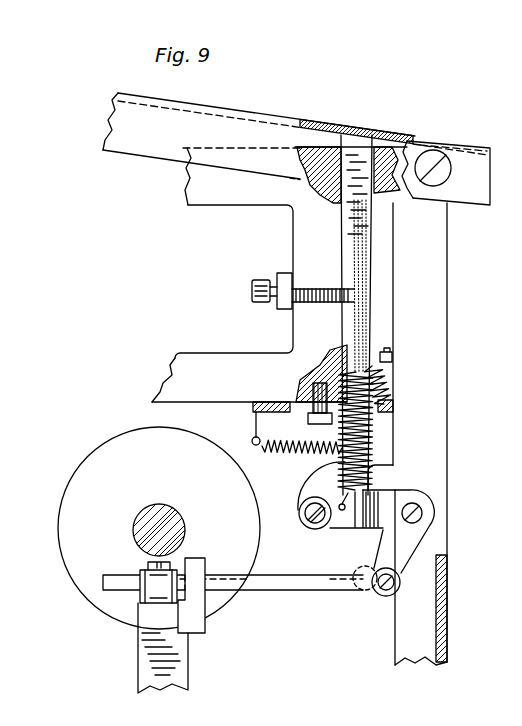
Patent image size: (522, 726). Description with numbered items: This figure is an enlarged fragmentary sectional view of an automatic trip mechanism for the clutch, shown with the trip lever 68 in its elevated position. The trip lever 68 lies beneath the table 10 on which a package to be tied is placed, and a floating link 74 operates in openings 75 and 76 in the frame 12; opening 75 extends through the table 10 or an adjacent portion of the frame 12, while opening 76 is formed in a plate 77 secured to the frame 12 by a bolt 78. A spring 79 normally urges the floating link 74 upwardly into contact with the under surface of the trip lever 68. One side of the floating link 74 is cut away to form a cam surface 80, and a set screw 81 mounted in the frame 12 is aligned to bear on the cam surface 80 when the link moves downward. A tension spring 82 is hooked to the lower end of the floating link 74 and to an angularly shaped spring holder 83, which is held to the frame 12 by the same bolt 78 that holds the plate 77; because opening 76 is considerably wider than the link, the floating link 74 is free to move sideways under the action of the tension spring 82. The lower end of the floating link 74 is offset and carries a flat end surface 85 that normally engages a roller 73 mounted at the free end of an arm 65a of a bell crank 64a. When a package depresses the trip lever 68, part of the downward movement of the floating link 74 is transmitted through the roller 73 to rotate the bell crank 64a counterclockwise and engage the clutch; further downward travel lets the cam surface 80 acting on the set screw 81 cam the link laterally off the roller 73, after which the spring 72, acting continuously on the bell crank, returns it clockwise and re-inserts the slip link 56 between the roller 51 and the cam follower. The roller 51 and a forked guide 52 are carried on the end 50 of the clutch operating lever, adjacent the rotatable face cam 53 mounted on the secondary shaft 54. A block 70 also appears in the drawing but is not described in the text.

The table 10 is at (208, 148).
The trip lever 68 is at (229, 109).
The opening 75 is at (340, 157).
The support block 70 is at (440, 160).
The frame 12 is at (445, 346).
The floating link 74 is at (373, 236).
The spring 72 is at (370, 423).
The spring 79 is at (353, 275).
The cam surface 80 is at (357, 277).
The set screw 81 is at (252, 288).
The opening 76 is at (352, 395).
The plate 77 is at (259, 401).
The bolt 78 is at (323, 423).
The spring holder 83 is at (252, 429).
The tension spring 82 is at (305, 456).
The face cam 53 is at (75, 471).
The secondary shaft 54 is at (150, 517).
The slip link 56 is at (306, 588).
The forked guide 52 is at (203, 566).
The roller 51 is at (140, 600).
The end of clutch lever 50 is at (137, 661).
The bell crank 64a is at (428, 537).
The arm 65a is at (357, 527).
The roller 73 is at (312, 529).
The flat end surface 85 is at (338, 528).